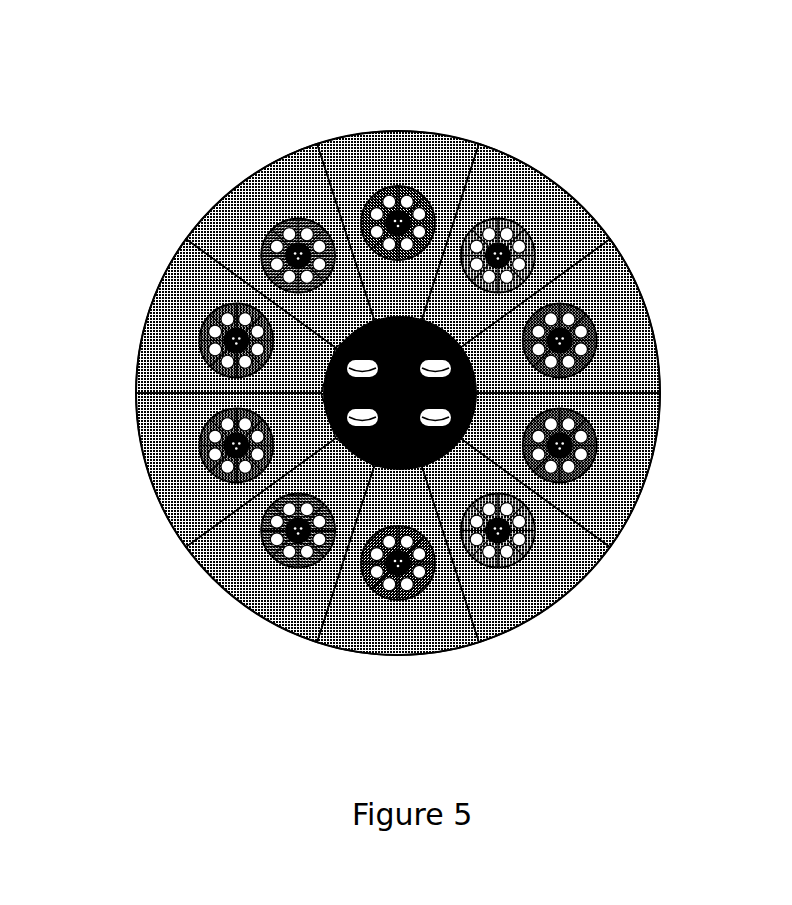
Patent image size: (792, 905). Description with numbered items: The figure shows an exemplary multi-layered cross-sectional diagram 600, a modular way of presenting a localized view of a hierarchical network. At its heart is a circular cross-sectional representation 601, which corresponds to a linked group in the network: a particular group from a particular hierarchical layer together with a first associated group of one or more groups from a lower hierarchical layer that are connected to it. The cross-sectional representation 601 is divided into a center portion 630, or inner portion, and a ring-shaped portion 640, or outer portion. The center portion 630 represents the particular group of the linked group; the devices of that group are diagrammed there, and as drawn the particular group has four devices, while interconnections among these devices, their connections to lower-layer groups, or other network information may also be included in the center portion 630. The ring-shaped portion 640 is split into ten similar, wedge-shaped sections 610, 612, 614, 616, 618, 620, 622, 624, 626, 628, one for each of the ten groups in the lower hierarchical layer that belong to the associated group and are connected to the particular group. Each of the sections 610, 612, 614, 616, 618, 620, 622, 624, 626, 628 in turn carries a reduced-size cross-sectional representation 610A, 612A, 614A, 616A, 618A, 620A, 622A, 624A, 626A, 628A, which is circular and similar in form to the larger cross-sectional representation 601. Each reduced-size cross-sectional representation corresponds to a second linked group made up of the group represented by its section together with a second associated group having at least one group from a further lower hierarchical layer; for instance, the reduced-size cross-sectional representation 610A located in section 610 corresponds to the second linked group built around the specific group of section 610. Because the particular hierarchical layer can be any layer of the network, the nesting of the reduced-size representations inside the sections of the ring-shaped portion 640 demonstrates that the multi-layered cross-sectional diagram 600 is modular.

The multi-layered cross-sectional diagram 600 is at (672, 97).
The cross-sectional representation 601 is at (658, 368).
The section 610 is at (557, 207).
The reduced-size cross-sectional representation 610A is at (512, 220).
The section 612 is at (632, 327).
The reduced-size cross-sectional representation 612A is at (584, 306).
The section 614 is at (610, 487).
The reduced-size cross-sectional representation 614A is at (596, 432).
The section 616 is at (523, 607).
The reduced-size cross-sectional representation 616A is at (530, 547).
The section 618 is at (392, 646).
The reduced-size cross-sectional representation 618A is at (410, 598).
The section 620 is at (265, 605).
The reduced-size cross-sectional representation 620A is at (264, 543).
The section 622 is at (172, 480).
The reduced-size cross-sectional representation 622A is at (200, 444).
The section 624 is at (165, 310).
The reduced-size cross-sectional representation 624A is at (200, 343).
The section 626 is at (288, 173).
The reduced-size cross-sectional representation 626A is at (275, 227).
The section 628 is at (369, 145).
The reduced-size cross-sectional representation 628A is at (417, 191).
The center portion 630 is at (469, 428).
The ring-shaped portion 640 is at (377, 318).